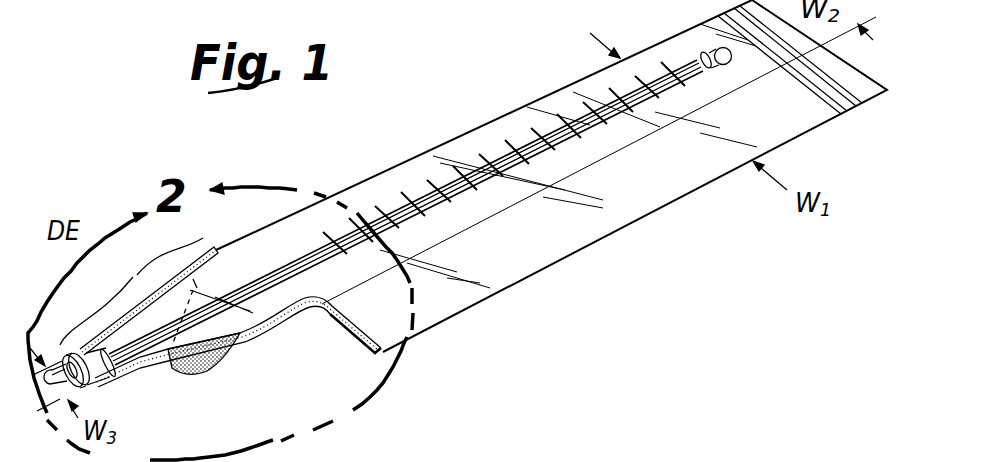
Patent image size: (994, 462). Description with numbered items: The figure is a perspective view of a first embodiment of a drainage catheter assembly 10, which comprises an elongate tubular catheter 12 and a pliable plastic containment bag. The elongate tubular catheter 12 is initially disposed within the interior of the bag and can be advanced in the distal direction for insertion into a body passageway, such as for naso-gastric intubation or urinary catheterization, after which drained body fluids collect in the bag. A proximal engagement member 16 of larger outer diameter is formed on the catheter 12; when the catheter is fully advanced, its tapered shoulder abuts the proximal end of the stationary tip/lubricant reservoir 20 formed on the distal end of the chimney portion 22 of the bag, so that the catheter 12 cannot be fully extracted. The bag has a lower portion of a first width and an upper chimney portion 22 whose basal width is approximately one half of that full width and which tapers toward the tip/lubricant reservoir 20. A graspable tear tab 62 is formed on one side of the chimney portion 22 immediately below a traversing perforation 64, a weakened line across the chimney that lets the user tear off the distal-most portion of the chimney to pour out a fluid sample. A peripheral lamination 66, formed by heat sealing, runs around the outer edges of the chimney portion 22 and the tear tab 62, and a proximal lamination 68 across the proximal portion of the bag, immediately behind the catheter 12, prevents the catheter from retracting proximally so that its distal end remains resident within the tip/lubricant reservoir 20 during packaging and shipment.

The drainage catheter assembly 10 is at (457, 118).
The elongate tubular catheter 12 is at (556, 126).
The proximal engagement member 16 is at (708, 52).
The tip/lubricant reservoir 20 is at (110, 375).
The chimney portion 22 is at (131, 291).
The graspable tear tab 62 is at (213, 360).
The traversing perforation 64 is at (203, 283).
The peripheral lamination 66 is at (216, 250).
The proximal lamination 68 is at (833, 92).